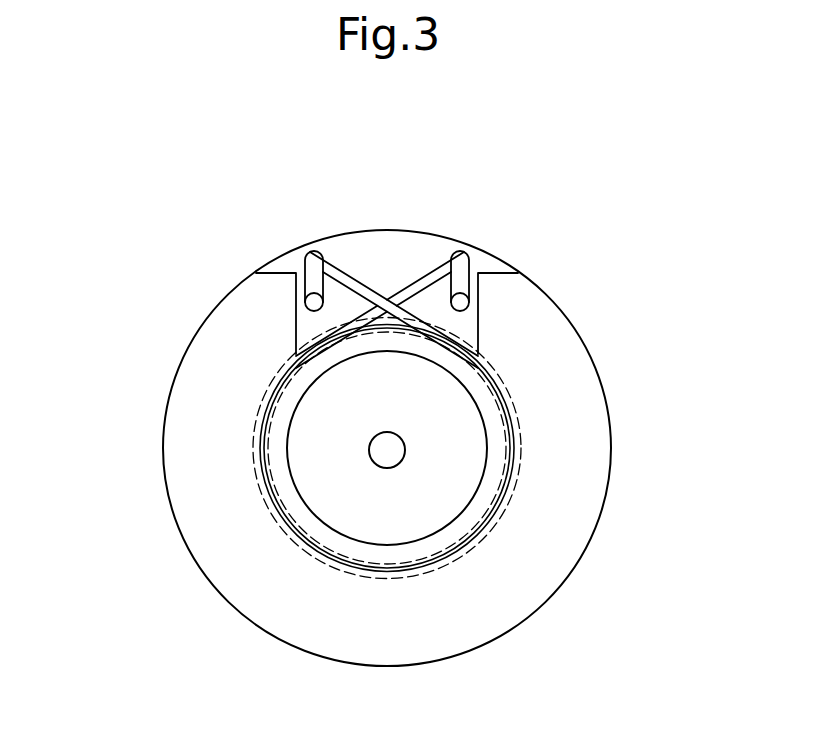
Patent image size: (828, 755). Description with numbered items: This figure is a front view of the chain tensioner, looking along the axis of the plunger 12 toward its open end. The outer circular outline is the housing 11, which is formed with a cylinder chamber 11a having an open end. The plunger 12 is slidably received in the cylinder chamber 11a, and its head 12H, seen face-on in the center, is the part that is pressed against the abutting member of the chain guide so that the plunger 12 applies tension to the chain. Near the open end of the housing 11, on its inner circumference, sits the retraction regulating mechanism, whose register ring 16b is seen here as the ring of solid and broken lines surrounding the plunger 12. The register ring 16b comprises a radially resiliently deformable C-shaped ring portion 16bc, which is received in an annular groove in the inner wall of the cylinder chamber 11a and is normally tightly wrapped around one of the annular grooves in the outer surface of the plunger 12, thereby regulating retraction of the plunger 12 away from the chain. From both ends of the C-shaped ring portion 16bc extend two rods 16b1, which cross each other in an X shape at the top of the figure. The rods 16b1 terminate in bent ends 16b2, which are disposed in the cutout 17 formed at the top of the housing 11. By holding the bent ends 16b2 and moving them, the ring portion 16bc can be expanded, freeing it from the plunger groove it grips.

The housing 11 is at (203, 357).
The cylinder chamber 11a is at (280, 518).
The plunger 12 is at (260, 425).
The head 12H is at (315, 460).
The register ring 16b is at (513, 397).
The C-shaped ring portion 16bc is at (520, 454).
The rods 16b1 is at (413, 273).
The bent ends 16b2 is at (310, 253).
The cutout 17 is at (466, 332).